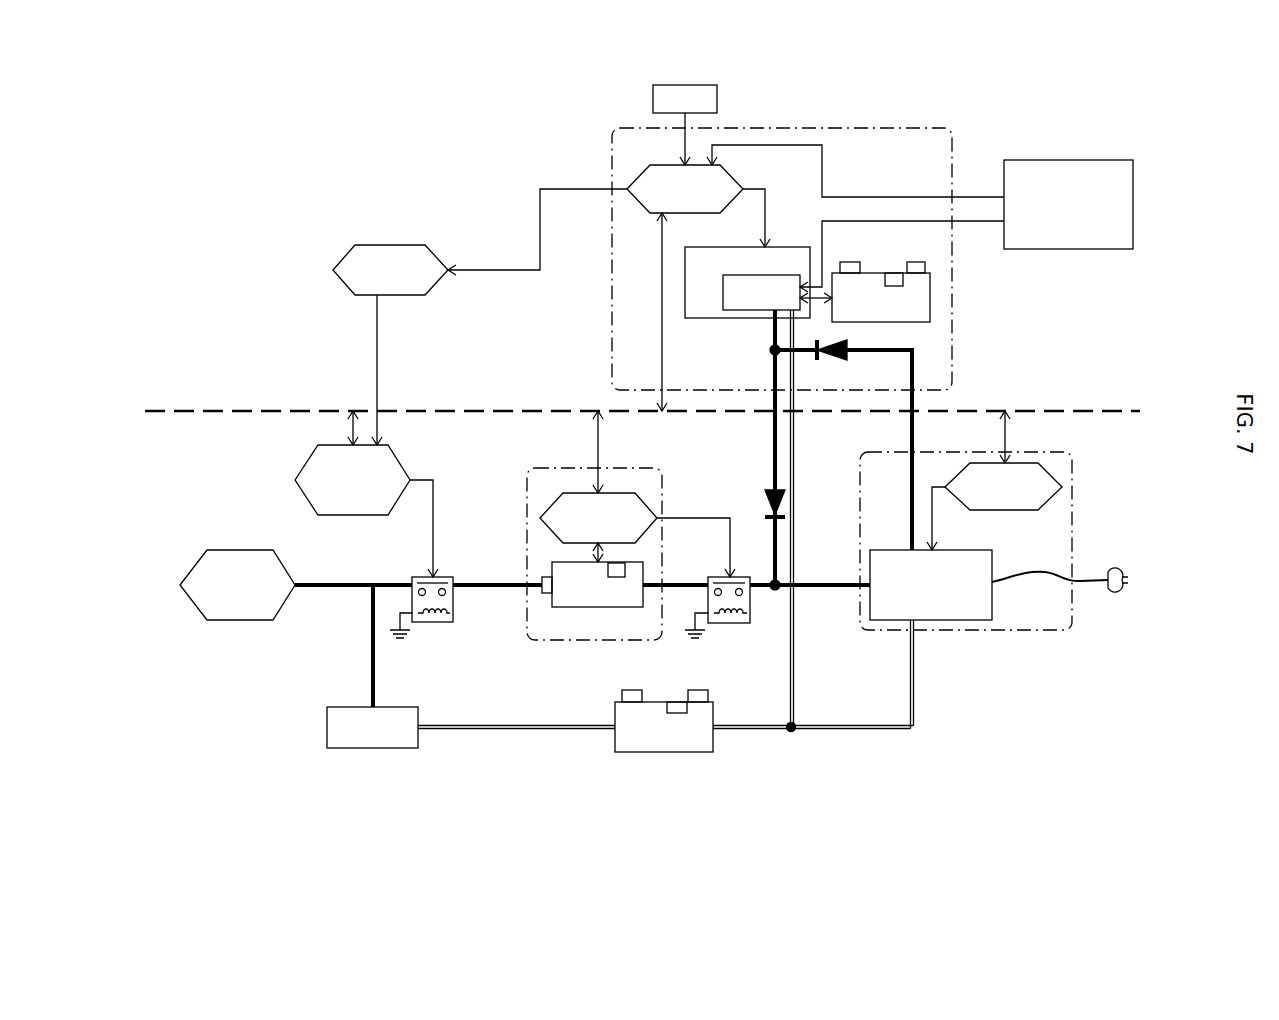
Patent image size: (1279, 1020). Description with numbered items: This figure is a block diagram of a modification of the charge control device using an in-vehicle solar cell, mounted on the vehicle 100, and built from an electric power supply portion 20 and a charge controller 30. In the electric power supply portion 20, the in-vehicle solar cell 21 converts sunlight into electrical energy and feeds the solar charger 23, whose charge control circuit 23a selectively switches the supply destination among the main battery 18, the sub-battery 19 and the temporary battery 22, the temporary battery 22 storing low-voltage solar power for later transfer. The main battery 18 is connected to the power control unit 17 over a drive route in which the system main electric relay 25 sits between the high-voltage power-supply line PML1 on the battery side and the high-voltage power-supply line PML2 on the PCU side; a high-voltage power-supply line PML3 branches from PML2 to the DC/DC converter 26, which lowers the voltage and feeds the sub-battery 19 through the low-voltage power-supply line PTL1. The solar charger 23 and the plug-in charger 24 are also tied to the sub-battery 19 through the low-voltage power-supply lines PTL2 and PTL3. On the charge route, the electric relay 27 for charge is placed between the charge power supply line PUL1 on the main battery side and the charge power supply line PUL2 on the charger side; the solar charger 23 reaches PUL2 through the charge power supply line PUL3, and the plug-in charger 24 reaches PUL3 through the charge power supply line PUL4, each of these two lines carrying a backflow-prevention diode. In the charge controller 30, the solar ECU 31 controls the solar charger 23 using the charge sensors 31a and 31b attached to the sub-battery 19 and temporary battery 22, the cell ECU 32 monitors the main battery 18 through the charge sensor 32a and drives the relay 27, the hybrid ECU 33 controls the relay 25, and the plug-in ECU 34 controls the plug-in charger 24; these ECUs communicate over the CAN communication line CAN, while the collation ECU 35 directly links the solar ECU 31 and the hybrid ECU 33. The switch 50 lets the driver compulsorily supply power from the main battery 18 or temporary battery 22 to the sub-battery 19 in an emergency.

The vehicle 100 is at (231, 763).
The electric power supply portion 20 is at (1097, 112).
The charge controller 30 is at (290, 185).
The switch 50 is at (653, 99).
The solar ECU 31 is at (660, 164).
The in-vehicle solar cell 21 is at (1028, 160).
The collation ECU 35 is at (400, 245).
The solar charger 23 is at (727, 247).
The charge control circuit 23a is at (745, 275).
The temporary battery 22 is at (882, 273).
The charge sensor 31b is at (895, 286).
The CAN communication line CAN is at (205, 410).
The hybrid ECU 33 is at (300, 463).
The power control unit 17 is at (238, 550).
The cell ECU 32 is at (585, 492).
The charge sensor 32a is at (620, 577).
The main battery 18 is at (595, 610).
The high-voltage power-supply line PML1 is at (485, 583).
The high-voltage power-supply line PML2 is at (325, 583).
The high-voltage power-supply line PML3 is at (373, 650).
The charge power supply line PUL1 is at (688, 583).
The charge power supply line PUL2 is at (820, 583).
The charge power supply line PUL3 is at (775, 445).
The charge power supply line PUL4 is at (912, 428).
The low-voltage power-supply line PTL1 is at (515, 725).
The low-voltage power-supply line PTL2 is at (795, 680).
The low-voltage power-supply line PTL3 is at (915, 680).
The system main electric relay 25 is at (440, 625).
The DC/DC converter 26 is at (327, 728).
The electric relay for charge 27 is at (740, 625).
The sub-battery 19 is at (663, 755).
The charge sensor 31a is at (683, 713).
The plug-in charger 24 is at (992, 598).
The plug-in ECU 34 is at (1000, 510).